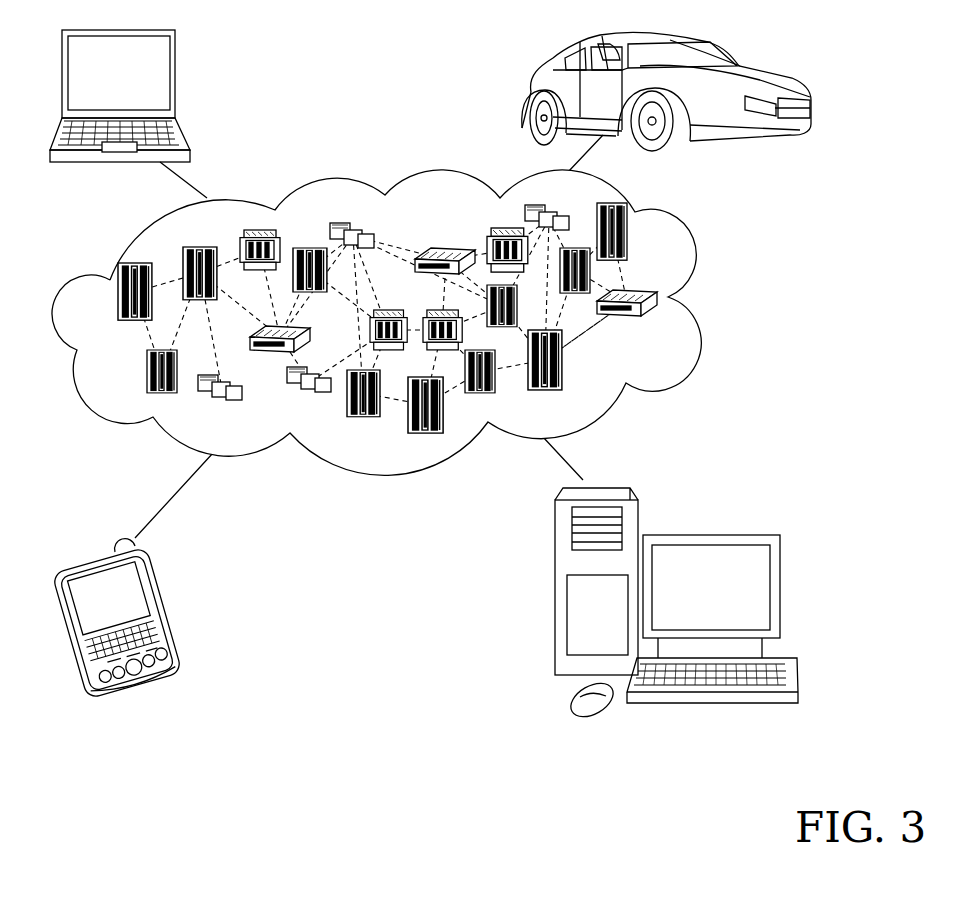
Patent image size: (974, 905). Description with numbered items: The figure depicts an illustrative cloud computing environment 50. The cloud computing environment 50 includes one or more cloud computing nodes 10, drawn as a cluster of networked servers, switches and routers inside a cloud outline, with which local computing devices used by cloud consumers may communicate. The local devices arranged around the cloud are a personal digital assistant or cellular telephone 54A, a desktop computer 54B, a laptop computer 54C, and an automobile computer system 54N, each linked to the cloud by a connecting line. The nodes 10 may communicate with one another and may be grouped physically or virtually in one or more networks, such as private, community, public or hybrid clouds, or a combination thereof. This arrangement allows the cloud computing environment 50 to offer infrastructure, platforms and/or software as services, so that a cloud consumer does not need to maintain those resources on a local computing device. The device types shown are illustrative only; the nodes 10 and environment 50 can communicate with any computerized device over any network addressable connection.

The cloud computing node 10 is at (666, 328).
The cloud computing environment 50 is at (405, 322).
The personal digital assistant or cellular telephone 54A is at (170, 610).
The desktop computer 54B is at (708, 532).
The laptop computer 54C is at (175, 79).
The automobile computer system 54N is at (528, 90).